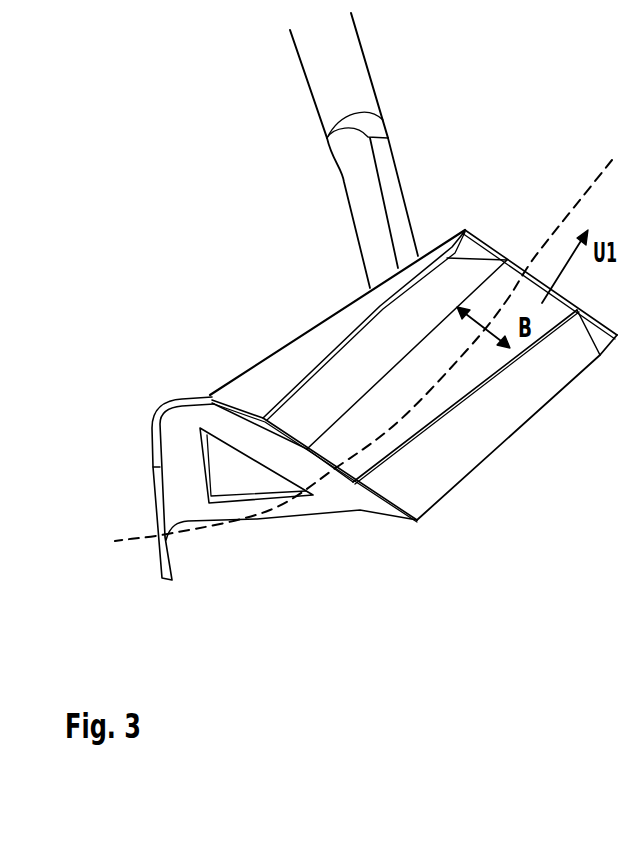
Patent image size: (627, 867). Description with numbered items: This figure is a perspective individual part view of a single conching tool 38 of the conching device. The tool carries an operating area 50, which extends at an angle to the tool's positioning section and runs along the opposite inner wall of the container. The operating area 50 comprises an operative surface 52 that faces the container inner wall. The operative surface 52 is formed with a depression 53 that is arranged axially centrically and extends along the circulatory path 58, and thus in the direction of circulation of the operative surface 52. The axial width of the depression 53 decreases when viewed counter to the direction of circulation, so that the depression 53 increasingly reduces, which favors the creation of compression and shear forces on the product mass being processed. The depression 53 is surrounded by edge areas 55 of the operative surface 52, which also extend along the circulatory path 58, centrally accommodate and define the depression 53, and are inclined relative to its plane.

The conching tool 38 is at (363, 82).
The operating area 50 is at (338, 293).
The operative surface 52 is at (493, 428).
The depression 53 is at (490, 350).
The edge areas 55 is at (432, 303).
The circulatory path 58 is at (257, 520).